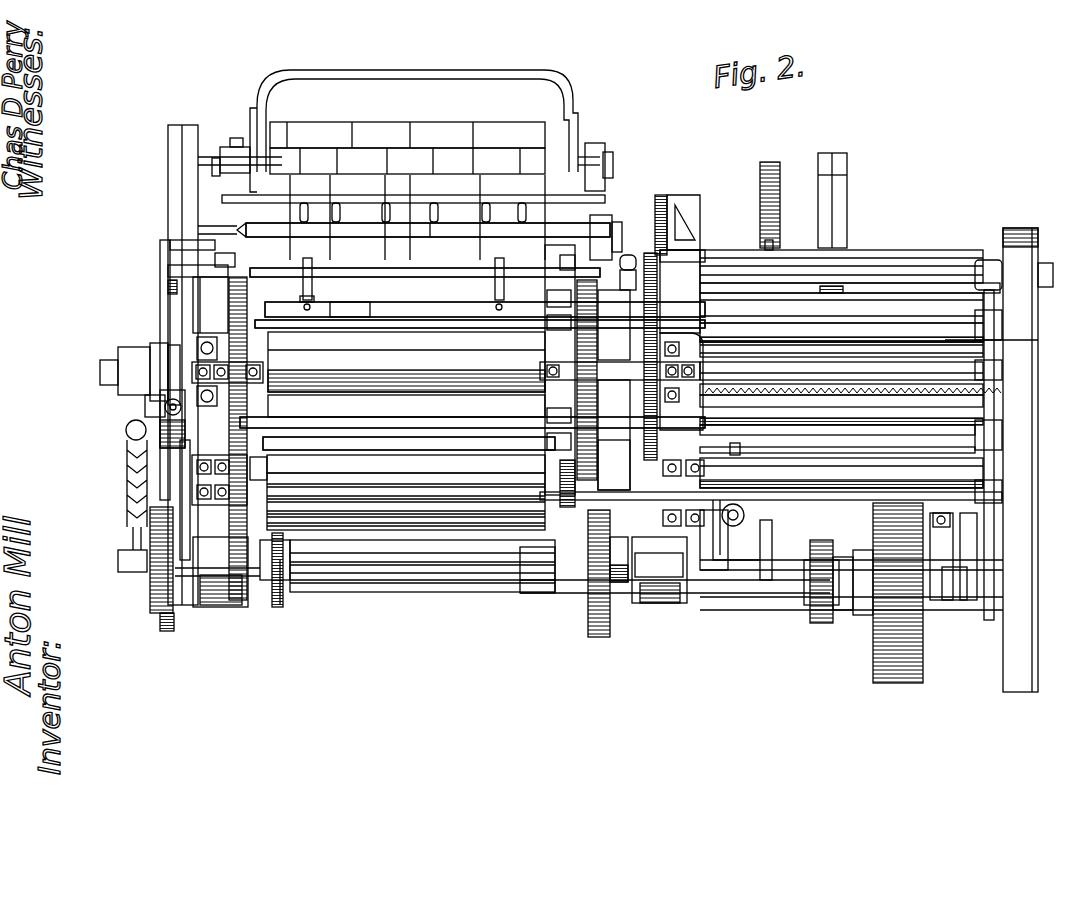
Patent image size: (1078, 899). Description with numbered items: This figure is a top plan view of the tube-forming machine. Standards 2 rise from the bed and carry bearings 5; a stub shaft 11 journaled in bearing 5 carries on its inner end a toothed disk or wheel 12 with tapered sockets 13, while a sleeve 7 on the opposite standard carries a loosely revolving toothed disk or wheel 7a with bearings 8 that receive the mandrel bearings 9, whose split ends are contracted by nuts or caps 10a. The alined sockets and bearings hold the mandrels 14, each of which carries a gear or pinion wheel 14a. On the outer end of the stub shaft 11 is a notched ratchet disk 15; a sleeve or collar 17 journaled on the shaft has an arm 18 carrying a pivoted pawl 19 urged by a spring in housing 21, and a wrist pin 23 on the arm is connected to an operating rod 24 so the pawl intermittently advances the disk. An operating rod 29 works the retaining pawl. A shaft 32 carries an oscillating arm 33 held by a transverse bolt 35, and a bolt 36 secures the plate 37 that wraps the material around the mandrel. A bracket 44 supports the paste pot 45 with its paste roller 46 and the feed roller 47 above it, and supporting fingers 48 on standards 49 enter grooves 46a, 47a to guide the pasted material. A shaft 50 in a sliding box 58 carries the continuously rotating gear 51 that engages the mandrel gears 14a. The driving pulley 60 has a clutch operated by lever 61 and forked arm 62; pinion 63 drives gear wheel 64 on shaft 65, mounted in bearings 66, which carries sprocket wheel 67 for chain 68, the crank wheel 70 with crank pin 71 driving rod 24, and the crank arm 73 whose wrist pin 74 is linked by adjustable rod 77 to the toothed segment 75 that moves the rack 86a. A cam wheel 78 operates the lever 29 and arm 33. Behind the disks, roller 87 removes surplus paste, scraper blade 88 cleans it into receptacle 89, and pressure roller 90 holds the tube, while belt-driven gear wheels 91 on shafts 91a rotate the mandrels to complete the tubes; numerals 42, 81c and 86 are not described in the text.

The standard 2 is at (200, 320).
The bearing 5 is at (192, 375).
The sleeve 7 is at (660, 340).
The disk or wheel 7a is at (658, 245).
The bearings 8 is at (620, 300).
The mandrel bearings 9 is at (625, 268).
The nut or cap 10a is at (712, 316).
The stub shaft 11 is at (100, 370).
The second disk or wheel 12 is at (200, 310).
The sockets or bearings 13 is at (255, 425).
The mandrels or cores 14 is at (440, 318).
The gear or pinion wheel 14a is at (625, 465).
The ratchet disk or wheel 15 is at (168, 290).
The sleeve or collar 17 is at (118, 350).
The arm 18 is at (145, 408).
The pawl 19 is at (172, 375).
The housing 21 is at (168, 414).
The wrist pin 23 is at (157, 412).
The operating rod 24 is at (127, 508).
The operating rod 29 is at (180, 530).
The shaft 32 is at (160, 240).
The oscillating plate or arm 33 is at (302, 270).
The transverse bolt 35 is at (410, 271).
The bolt 36 is at (308, 305).
The plate 37 is at (428, 318).
The arm 42 is at (180, 268).
The bracket 44 is at (315, 237).
The glue or paste pot 45 is at (488, 85).
The paste roller 46 is at (320, 138).
The grooves 46a is at (350, 128).
The feed roller 47 is at (370, 160).
The grooves 47a is at (438, 150).
The supporting fingers 48 is at (470, 248).
The standards 49 is at (590, 230).
The shaft 50 is at (845, 272).
The continuously rotating pinion or gear wheel 51 is at (697, 216).
The sliding box or bearing 58 is at (690, 250).
The driving pulley 60 is at (873, 655).
The operating lever 61 is at (847, 165).
The forked arm 62 is at (815, 610).
The pinion 63 is at (622, 585).
The gear wheel 64 is at (598, 637).
The shaft 65 is at (462, 560).
The bearings 66 is at (238, 560).
The sprocket wheel 67 is at (285, 600).
The sprocket chain 68 is at (272, 590).
The crank wheel 70 is at (152, 600).
The crank pin 71 is at (122, 556).
The crank arm 73 is at (780, 225).
The wrist pin 74 is at (746, 516).
The toothed segment 75 is at (780, 180).
The adjustable rod 77 is at (745, 450).
The cam wheel 78 is at (170, 632).
The rod 81c is at (975, 340).
The roller bar 86 is at (940, 395).
The rack 86a is at (855, 390).
The roller 87 is at (380, 455).
The scraper blade 88 is at (428, 498).
The receptacle 89 is at (545, 500).
The pressure roller 90 is at (350, 365).
The gear wheels 91 is at (705, 358).
The shafts 91a is at (888, 370).